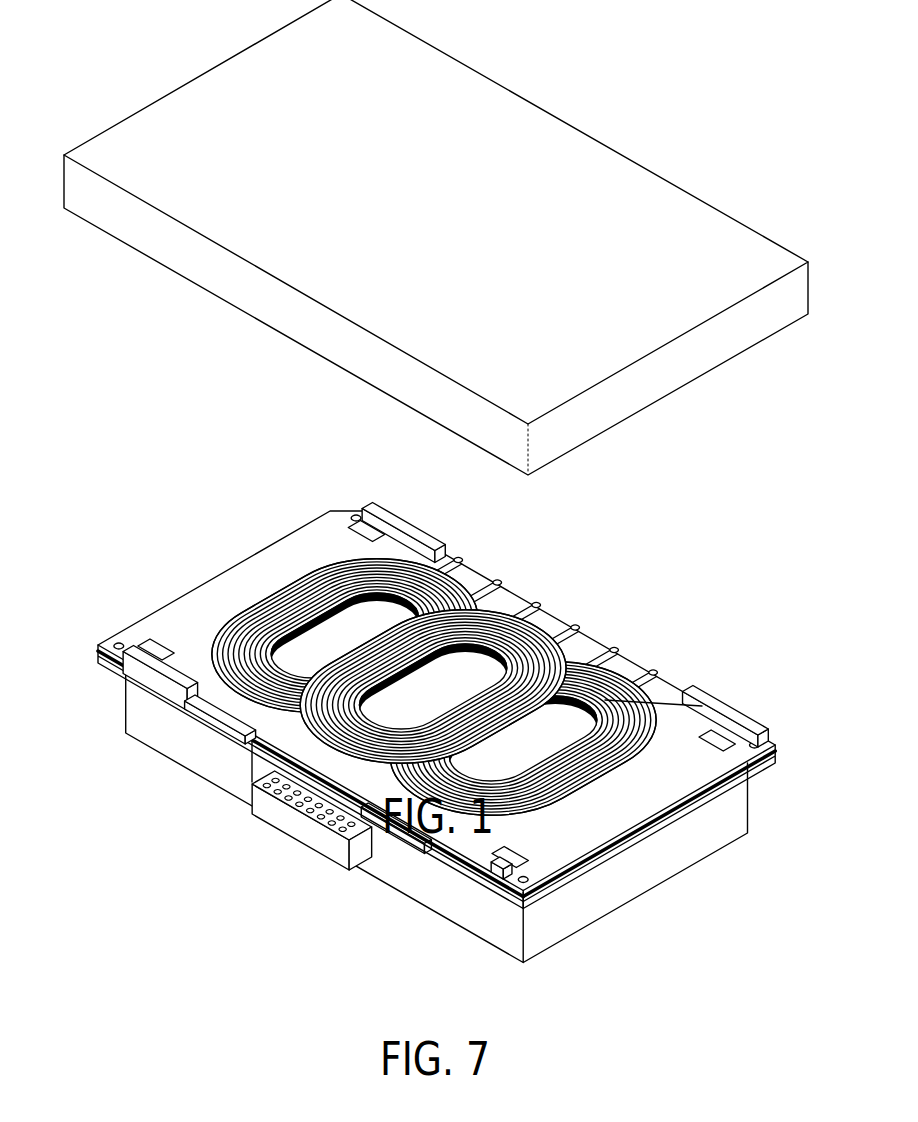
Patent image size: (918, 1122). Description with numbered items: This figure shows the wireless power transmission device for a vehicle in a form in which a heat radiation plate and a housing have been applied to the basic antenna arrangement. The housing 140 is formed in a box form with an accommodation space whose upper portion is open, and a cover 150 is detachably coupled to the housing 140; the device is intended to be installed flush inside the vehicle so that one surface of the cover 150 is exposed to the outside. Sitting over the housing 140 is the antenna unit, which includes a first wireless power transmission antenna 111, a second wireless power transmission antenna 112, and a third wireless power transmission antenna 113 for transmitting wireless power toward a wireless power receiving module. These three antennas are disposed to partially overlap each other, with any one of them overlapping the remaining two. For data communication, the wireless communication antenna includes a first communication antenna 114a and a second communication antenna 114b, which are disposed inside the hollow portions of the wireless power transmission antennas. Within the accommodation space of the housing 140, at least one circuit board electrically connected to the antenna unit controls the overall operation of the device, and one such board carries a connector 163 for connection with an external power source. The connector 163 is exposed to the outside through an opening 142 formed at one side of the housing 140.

The cover 150 is at (534, 100).
The first wireless power transmission antenna 111 is at (420, 580).
The second wireless power transmission antenna 112 is at (608, 683).
The third wireless power transmission antenna 113 is at (490, 642).
The first communication antenna 114a is at (330, 618).
The second communication antenna 114b is at (720, 697).
The housing 140 is at (648, 882).
The opening 142 is at (370, 840).
The connector 163 is at (293, 835).